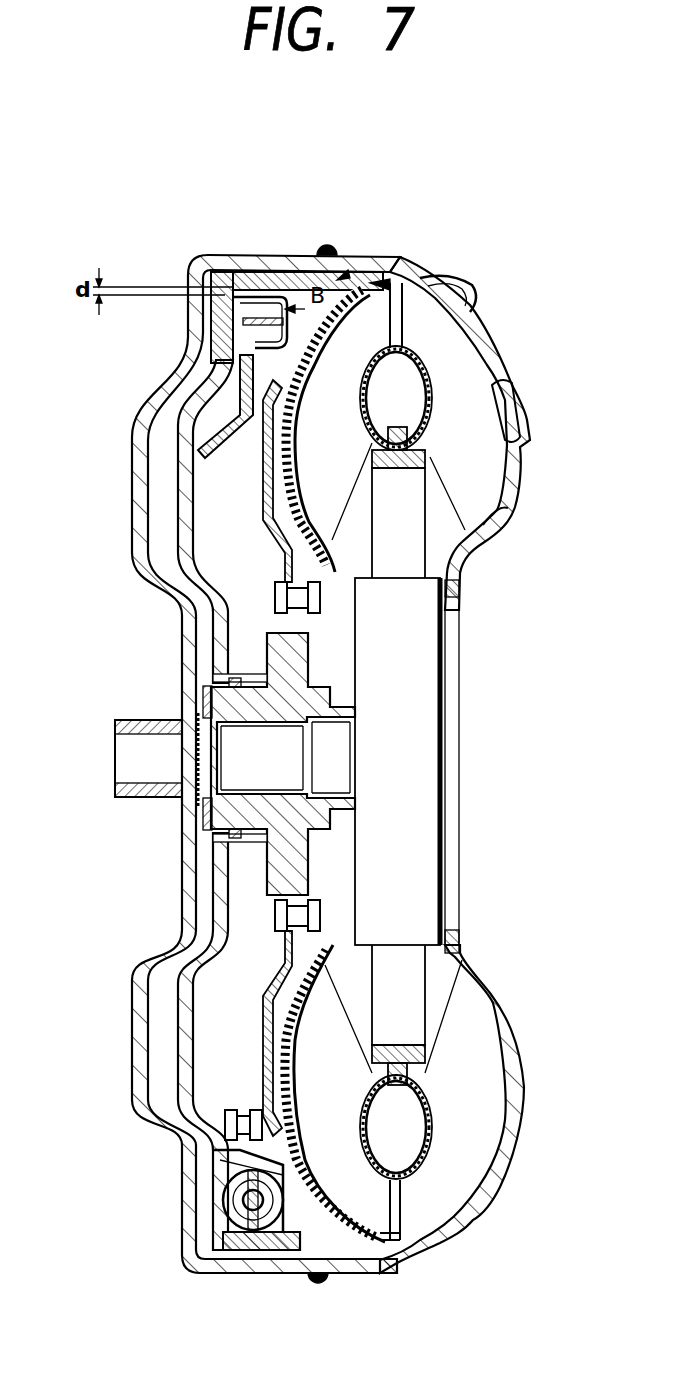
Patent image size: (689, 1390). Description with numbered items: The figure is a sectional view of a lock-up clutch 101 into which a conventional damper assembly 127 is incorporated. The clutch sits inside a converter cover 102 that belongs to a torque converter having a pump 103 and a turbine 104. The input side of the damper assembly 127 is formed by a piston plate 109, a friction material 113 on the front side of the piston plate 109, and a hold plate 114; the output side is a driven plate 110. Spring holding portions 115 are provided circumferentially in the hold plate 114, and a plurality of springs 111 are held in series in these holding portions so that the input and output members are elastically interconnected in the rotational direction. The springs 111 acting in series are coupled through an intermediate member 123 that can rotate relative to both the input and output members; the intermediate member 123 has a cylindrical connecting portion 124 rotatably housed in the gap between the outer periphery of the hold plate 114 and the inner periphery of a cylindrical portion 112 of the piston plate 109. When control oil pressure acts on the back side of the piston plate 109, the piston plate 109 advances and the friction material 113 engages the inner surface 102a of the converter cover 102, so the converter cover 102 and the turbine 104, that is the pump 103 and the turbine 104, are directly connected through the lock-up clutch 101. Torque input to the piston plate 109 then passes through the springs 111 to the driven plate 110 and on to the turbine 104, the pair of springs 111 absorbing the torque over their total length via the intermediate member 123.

The lock-up clutch 101 is at (178, 437).
The converter cover 102 is at (147, 578).
The inner surface of the converter cover 102a is at (208, 363).
The pump 103 is at (497, 325).
The turbine 104 is at (402, 258).
The piston plate 109 is at (172, 527).
The driven plate 110 is at (306, 360).
The springs 111 is at (283, 1190).
The cylindrical portion of the piston plate 112 is at (325, 245).
The friction material 113 is at (243, 321).
The hold plate 114 is at (214, 406).
The spring holding portion 115 is at (290, 1200).
The intermediate member 123 is at (213, 252).
The cylindrical connecting portion 124 is at (252, 273).
The damper assembly 127 is at (342, 275).